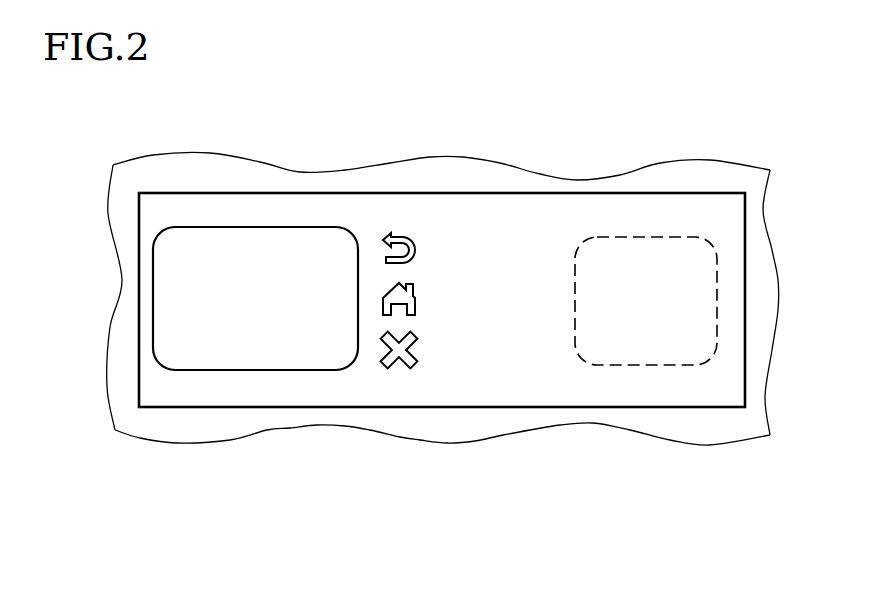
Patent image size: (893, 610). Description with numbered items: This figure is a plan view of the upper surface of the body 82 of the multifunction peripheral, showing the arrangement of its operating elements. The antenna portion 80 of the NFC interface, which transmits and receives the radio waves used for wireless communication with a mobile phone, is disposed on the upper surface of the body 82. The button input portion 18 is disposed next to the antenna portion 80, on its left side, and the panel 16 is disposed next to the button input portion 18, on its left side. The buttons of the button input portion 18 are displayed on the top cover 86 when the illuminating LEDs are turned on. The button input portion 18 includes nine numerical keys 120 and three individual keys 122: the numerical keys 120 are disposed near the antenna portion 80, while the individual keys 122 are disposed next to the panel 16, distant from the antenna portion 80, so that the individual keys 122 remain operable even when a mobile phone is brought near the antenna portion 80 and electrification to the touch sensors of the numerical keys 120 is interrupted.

The body 82 is at (202, 172).
The panel 16 is at (283, 222).
The individual keys 122 is at (415, 338).
The button input portion 18 is at (499, 302).
The top cover 86 is at (610, 195).
The antenna portion 80 is at (670, 233).
The numerical keys 120 is at (452, 360).